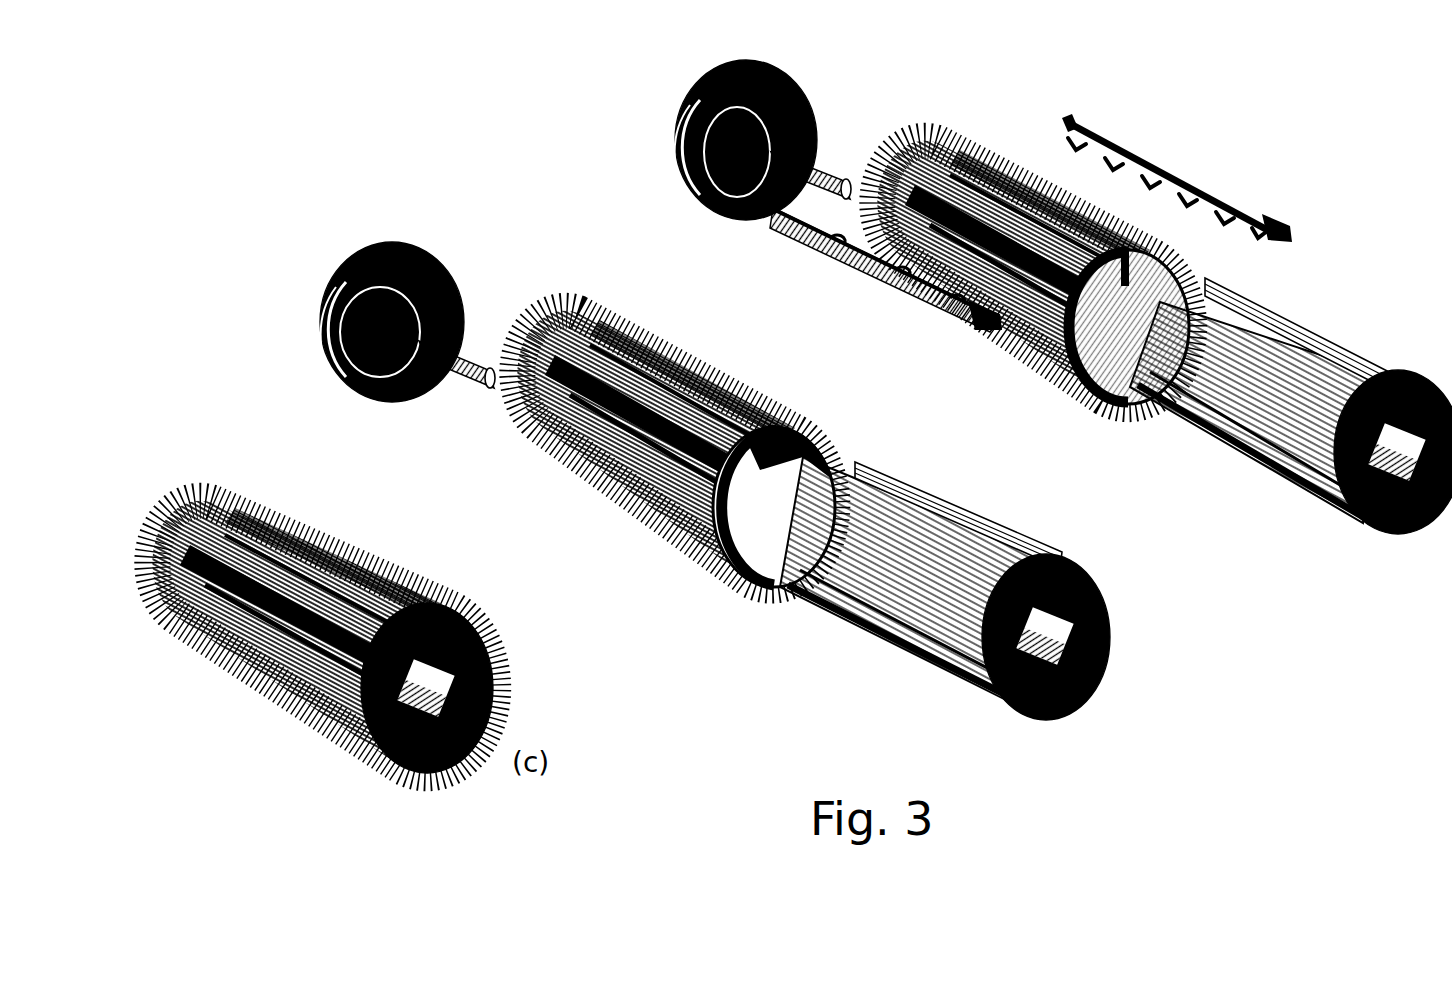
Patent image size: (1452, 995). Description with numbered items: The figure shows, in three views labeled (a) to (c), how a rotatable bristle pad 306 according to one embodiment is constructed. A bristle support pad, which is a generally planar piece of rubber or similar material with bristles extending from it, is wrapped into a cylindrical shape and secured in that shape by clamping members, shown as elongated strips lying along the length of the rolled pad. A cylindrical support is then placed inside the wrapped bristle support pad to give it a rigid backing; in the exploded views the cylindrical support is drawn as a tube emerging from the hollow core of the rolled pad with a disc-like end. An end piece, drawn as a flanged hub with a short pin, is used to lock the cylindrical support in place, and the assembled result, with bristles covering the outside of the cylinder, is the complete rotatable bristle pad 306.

The rotatable bristle pad 306 is at (802, 401).